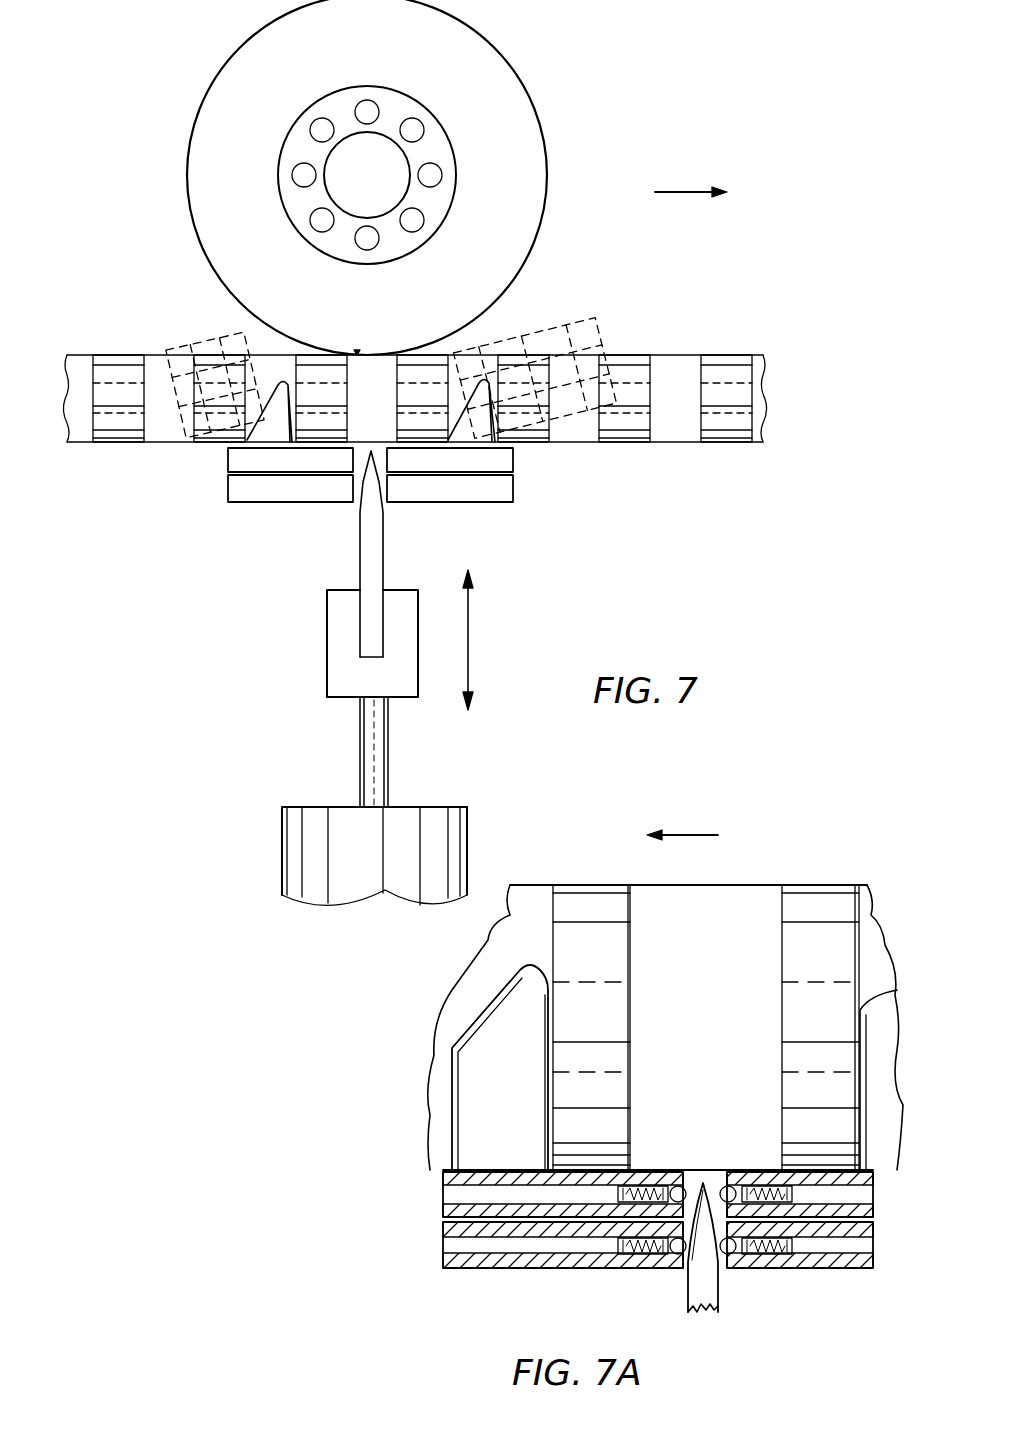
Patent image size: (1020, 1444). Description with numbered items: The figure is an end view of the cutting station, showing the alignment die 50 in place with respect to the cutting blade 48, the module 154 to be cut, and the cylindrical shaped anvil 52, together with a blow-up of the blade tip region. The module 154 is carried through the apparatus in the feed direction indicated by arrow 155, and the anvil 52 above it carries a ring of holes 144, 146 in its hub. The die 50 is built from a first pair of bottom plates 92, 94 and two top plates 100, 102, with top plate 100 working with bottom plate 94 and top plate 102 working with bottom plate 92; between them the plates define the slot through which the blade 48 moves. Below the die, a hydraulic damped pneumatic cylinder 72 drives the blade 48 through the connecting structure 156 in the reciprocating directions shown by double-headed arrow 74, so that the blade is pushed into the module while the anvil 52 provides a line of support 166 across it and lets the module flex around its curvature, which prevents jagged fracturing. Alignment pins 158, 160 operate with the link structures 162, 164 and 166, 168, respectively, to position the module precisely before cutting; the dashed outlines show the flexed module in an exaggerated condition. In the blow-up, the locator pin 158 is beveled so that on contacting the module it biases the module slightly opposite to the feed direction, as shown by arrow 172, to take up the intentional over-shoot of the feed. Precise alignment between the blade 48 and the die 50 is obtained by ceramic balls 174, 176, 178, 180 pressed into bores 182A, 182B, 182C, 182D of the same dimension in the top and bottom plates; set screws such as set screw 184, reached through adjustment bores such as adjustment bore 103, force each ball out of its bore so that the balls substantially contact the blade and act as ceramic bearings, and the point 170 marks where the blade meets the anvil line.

In FIG. 7, the cutting blade 48 is at (360, 548).
In FIG. 7A, the cutting blade 48 is at (695, 1293).
In FIG. 7, the alignment die 50 is at (537, 546).
In FIG. 7A, the alignment die 50 is at (838, 1269).
In FIG. 7, the cylindrical shaped anvil 52 is at (537, 127).
In FIG. 7, the hydraulic damped pneumatic cylinder 72 is at (467, 824).
In FIG. 7, the double-headed arrow 74 is at (470, 662).
In FIG. 7, the bottom plate 92 is at (248, 522).
In FIG. 7, the bottom plate 94 is at (495, 498).
In FIG. 7, the top plate 100 is at (508, 462).
In FIG. 7, the top plate 102 is at (228, 462).
In FIG. 7A, the top plate 102 is at (658, 1194).
In FIG. 7A, the adjustment bore 103 is at (860, 1263).
In FIG. 7, the wheel hole 144 is at (420, 126).
In FIG. 7, the wheel hole 146 is at (442, 176).
In FIG. 7, the module 154 is at (722, 430).
In FIG. 7A, the module 154 is at (665, 1027).
In FIG. 7, the arrow 155 is at (672, 192).
In FIG. 7, the structure 156 is at (408, 700).
In FIG. 7, the alignment pin 158 is at (248, 449).
In FIG. 7A, the alignment pin 158 is at (458, 1082).
In FIG. 7, the alignment pin 160 is at (445, 444).
In FIG. 7, the link structure 162 is at (200, 443).
In FIG. 7, the link structure 164 is at (282, 352).
In FIG. 7, the link structure 166 is at (455, 355).
In FIG. 7, the link structure 168 is at (540, 444).
In FIG. 7, the contact point 170 is at (360, 354).
In FIG. 7, the arrow 172 is at (696, 835).
In FIG. 7A, the ceramic ball 174 is at (716, 1272).
In FIG. 7A, the ceramic ball 176 is at (722, 1184).
In FIG. 7A, the ceramic ball 178 is at (672, 1257).
In FIG. 7A, the ceramic ball 180 is at (689, 1182).
In FIG. 7A, the bore 182A is at (790, 1257).
In FIG. 7A, the bore 182B is at (640, 1188).
In FIG. 7A, the bore 182C is at (615, 1252).
In FIG. 7A, the bore 182D is at (772, 1188).
In FIG. 7A, the set screw 184 is at (778, 1270).